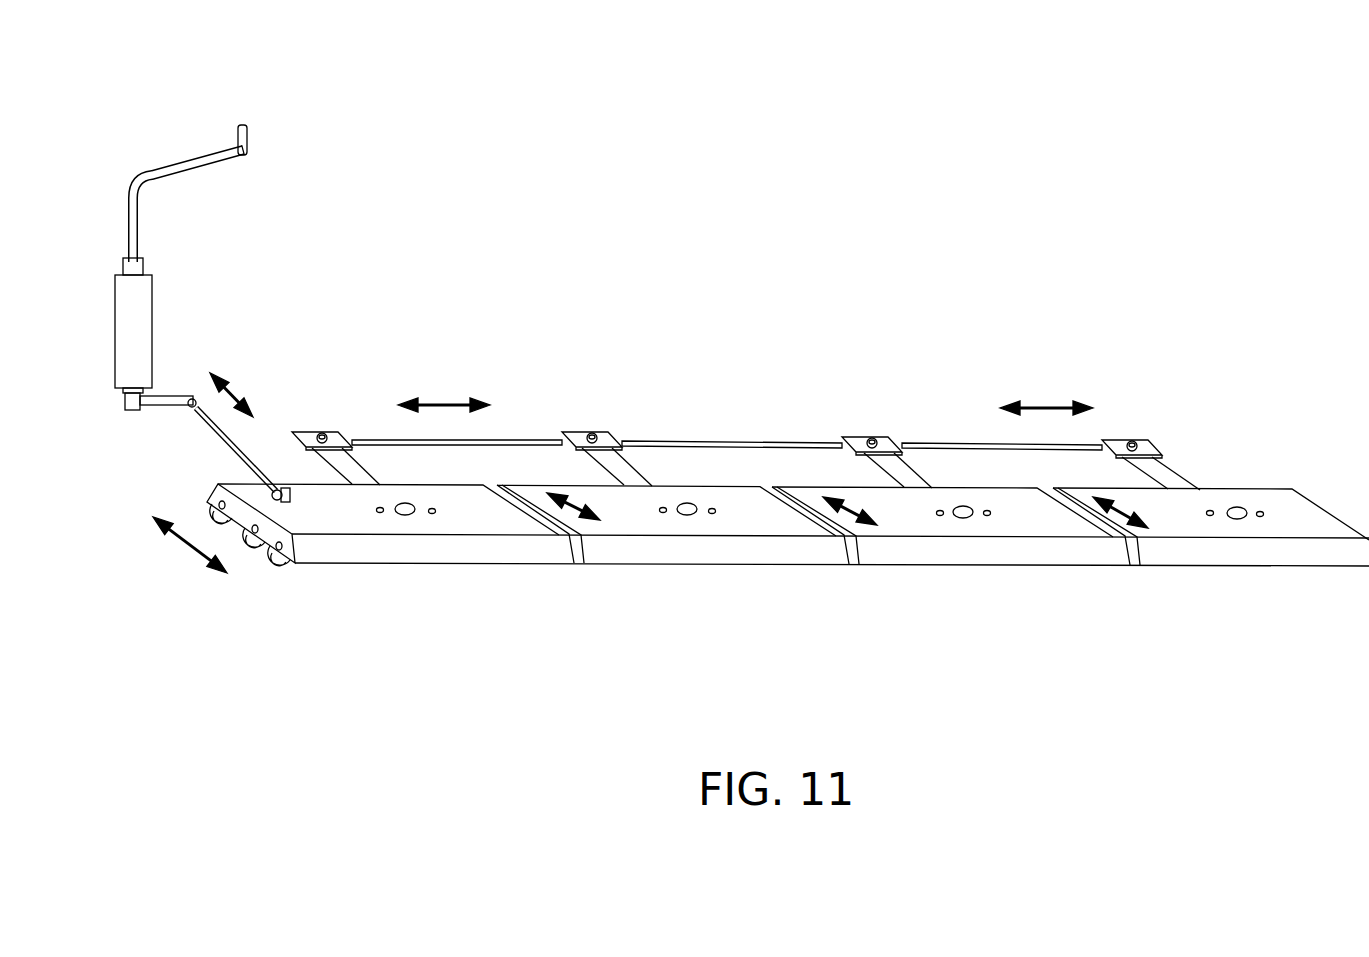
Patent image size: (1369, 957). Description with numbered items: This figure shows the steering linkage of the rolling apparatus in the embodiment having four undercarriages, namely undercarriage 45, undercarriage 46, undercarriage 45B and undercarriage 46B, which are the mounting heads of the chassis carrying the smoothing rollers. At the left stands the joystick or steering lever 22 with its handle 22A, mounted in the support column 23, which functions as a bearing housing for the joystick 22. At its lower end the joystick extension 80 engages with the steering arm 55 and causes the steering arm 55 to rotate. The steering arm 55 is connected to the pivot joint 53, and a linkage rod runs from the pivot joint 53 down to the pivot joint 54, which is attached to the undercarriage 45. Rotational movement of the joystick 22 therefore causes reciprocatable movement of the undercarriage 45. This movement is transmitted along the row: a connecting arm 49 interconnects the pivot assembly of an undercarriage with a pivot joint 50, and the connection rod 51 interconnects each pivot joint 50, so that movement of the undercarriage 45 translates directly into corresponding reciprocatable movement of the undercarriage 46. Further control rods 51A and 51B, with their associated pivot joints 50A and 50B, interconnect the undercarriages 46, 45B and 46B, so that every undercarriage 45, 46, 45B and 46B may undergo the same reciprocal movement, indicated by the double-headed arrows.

The joystick 22 is at (190, 163).
The handle 22A is at (248, 140).
The support column 23 is at (140, 300).
The joystick extension 80 is at (128, 405).
The steering arm 55 is at (170, 405).
The pivot joint 53 is at (190, 395).
The pivot joint 54 is at (282, 488).
The connecting arm 49 is at (330, 470).
The pivot joint 50 is at (335, 440).
The connection rod 51 is at (493, 442).
The control rod 51A is at (692, 443).
The pivot joint 50A is at (883, 440).
The control rod 51B is at (943, 447).
The pivot joint 50B is at (1143, 440).
The undercarriage 45 is at (465, 550).
The undercarriage 46 is at (693, 552).
The undercarriage 45B is at (982, 552).
The undercarriage 46B is at (1258, 552).